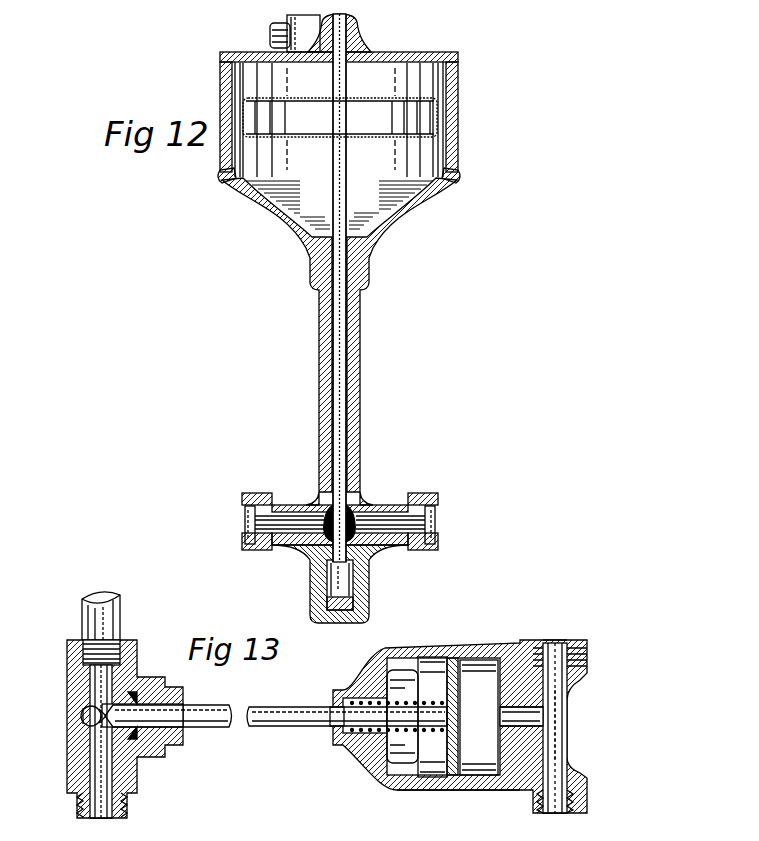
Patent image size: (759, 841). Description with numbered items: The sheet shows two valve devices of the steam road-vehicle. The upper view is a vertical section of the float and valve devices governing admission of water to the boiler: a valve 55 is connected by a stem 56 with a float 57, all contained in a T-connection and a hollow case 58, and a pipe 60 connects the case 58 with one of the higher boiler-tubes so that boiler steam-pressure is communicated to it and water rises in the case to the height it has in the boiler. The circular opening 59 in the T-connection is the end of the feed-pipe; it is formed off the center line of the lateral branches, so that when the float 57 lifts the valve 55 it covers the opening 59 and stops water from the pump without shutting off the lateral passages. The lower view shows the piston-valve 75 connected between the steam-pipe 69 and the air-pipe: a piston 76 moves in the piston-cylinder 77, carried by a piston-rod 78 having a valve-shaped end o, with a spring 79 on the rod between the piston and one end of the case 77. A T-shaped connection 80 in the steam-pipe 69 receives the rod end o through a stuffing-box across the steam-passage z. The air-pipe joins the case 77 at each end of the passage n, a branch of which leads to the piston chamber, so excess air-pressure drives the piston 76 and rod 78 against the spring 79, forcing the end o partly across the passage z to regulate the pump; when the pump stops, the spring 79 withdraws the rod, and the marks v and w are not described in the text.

In FIG. 12, the valve 55 is at (343, 588).
In FIG. 12, the valve-stem 56 is at (337, 383).
In FIG. 12, the float 57 is at (295, 104).
In FIG. 12, the hollow case 58 is at (458, 92).
In FIG. 12, the circular opening 59 is at (355, 535).
In FIG. 12, the pipe 60 is at (268, 34).
In FIG. 13, the steam-pipe 69 is at (121, 618).
In FIG. 13, the piston-valve 75 is at (312, 802).
In FIG. 13, the piston 76 is at (461, 737).
In FIG. 13, the piston-cylinder 77 is at (471, 791).
In FIG. 13, the piston-rod 78 is at (258, 729).
In FIG. 13, the spring 79 is at (432, 730).
In FIG. 13, the T-shaped connection 80 is at (80, 706).
In FIG. 13, the valve-shaped end o is at (92, 708).
In FIG. 13, the steam-passage z is at (100, 819).
In FIG. 13, the passage n is at (553, 725).
In FIG. 13, the pipe end v is at (555, 630).
In FIG. 13, the pipe end w is at (555, 822).